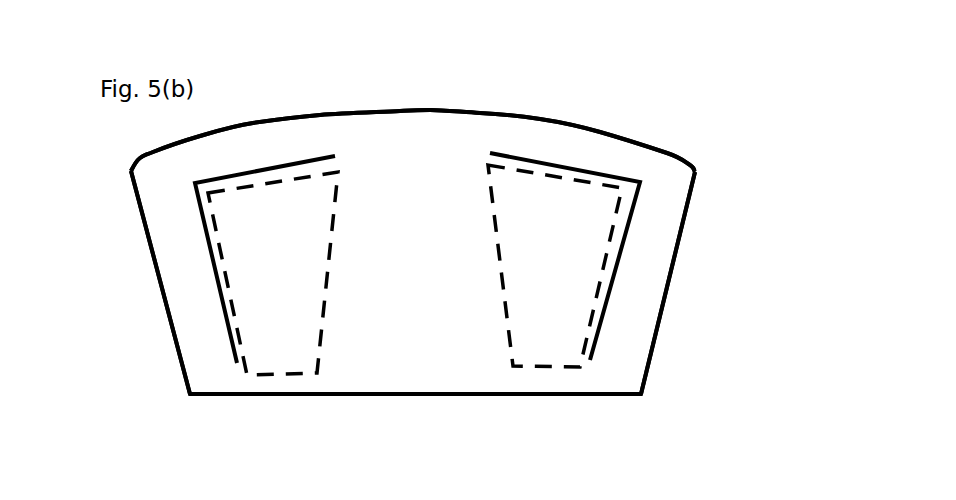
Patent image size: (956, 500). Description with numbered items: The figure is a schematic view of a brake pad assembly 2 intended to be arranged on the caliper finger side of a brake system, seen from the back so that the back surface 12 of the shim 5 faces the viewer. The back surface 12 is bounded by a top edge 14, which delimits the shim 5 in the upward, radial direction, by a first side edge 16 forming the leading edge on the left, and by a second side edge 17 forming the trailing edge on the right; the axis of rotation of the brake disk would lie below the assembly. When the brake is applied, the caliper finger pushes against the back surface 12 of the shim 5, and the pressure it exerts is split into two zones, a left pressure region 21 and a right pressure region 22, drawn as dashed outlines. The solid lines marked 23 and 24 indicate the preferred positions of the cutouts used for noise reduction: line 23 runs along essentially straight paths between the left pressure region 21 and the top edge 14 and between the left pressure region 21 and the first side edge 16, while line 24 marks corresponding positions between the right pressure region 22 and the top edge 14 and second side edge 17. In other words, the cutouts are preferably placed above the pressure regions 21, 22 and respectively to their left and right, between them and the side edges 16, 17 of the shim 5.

The brake pad assembly 2 is at (460, 282).
The shim 5 is at (460, 282).
The back surface 12 is at (615, 356).
The top edge 14 is at (300, 117).
The first side edge 16 is at (157, 272).
The second side edge 17 is at (667, 308).
The left pressure region 21 is at (301, 353).
The right pressure region 22 is at (538, 357).
The line indicating cutout positions 23 is at (205, 182).
The line indicating cutout positions 24 is at (555, 162).